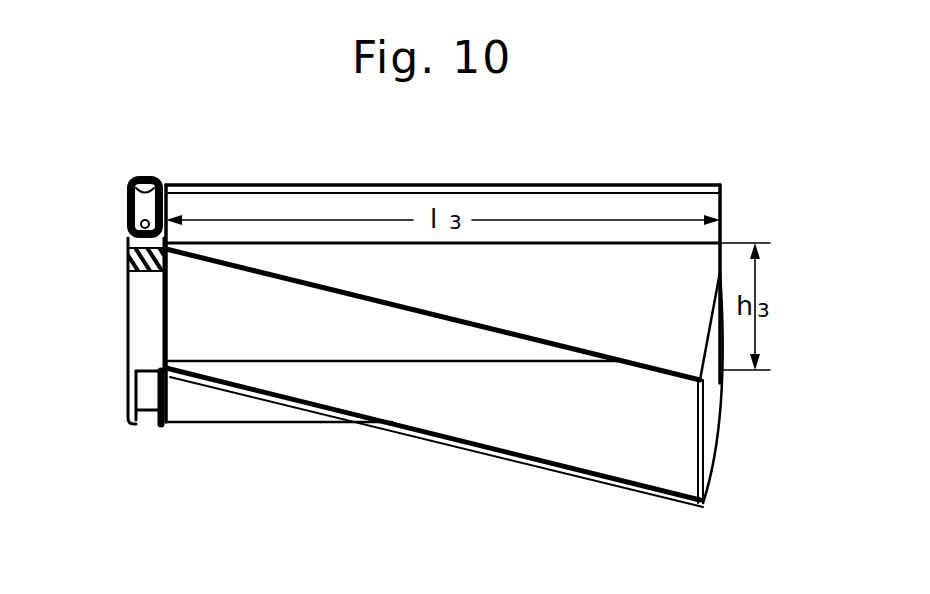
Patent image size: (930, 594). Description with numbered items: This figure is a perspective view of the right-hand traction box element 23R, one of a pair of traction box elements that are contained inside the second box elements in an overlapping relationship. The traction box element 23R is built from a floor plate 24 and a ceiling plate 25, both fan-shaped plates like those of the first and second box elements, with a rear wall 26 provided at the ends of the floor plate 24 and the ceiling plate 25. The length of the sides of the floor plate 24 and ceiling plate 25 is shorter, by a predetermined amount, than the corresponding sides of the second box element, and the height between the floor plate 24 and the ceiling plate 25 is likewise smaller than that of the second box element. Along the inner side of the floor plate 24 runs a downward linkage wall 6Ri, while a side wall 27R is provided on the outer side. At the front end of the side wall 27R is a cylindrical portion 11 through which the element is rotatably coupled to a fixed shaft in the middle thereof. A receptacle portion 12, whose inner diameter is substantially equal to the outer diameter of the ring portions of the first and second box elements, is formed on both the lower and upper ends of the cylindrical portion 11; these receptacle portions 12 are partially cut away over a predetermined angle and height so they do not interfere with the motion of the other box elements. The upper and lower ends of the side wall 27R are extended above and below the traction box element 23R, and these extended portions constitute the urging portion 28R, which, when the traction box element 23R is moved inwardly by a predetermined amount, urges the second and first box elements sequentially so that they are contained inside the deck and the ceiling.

The cylindrical portion 11 is at (140, 317).
The receptacle portion 12 is at (157, 175).
The traction box element 23R is at (770, 191).
The urging portion 28R is at (569, 198).
The side wall 27R is at (425, 412).
The ceiling plate 25 is at (567, 320).
The floor plate 24 is at (613, 460).
The downward linkage wall 6Ri is at (662, 503).
The rear wall 26 is at (713, 432).